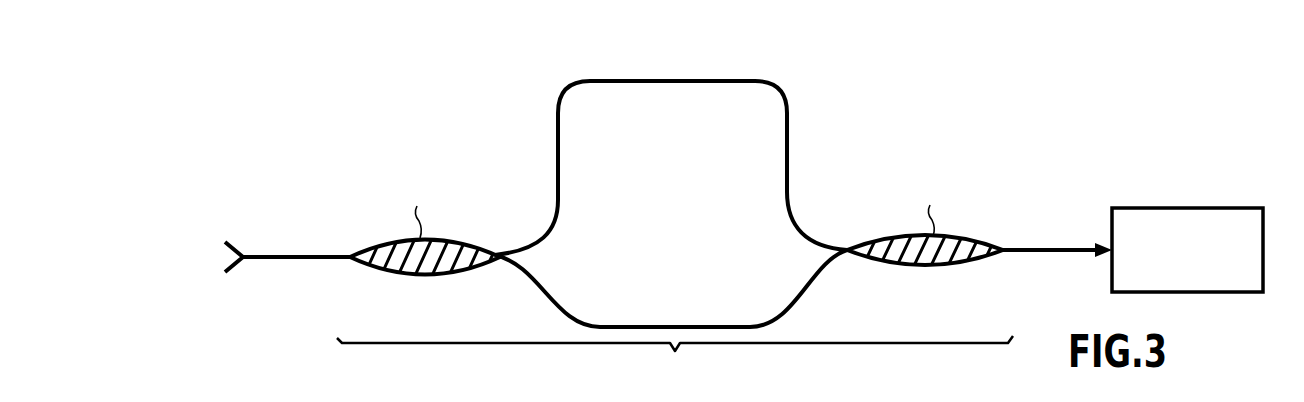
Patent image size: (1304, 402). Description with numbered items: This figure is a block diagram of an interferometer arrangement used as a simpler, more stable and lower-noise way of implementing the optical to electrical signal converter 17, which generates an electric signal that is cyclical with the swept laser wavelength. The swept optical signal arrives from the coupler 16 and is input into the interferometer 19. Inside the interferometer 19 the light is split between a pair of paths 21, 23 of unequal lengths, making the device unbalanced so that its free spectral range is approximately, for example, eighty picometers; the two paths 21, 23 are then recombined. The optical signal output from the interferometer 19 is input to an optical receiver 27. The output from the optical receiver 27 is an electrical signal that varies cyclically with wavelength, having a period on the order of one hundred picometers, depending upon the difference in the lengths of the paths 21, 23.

The coupler 16 is at (260, 257).
The optical to electrical signal converter 17 is at (437, 80).
The interferometer 19 is at (675, 212).
The path 21 is at (748, 79).
The path 23 is at (607, 326).
The optical receiver 27 is at (1221, 207).